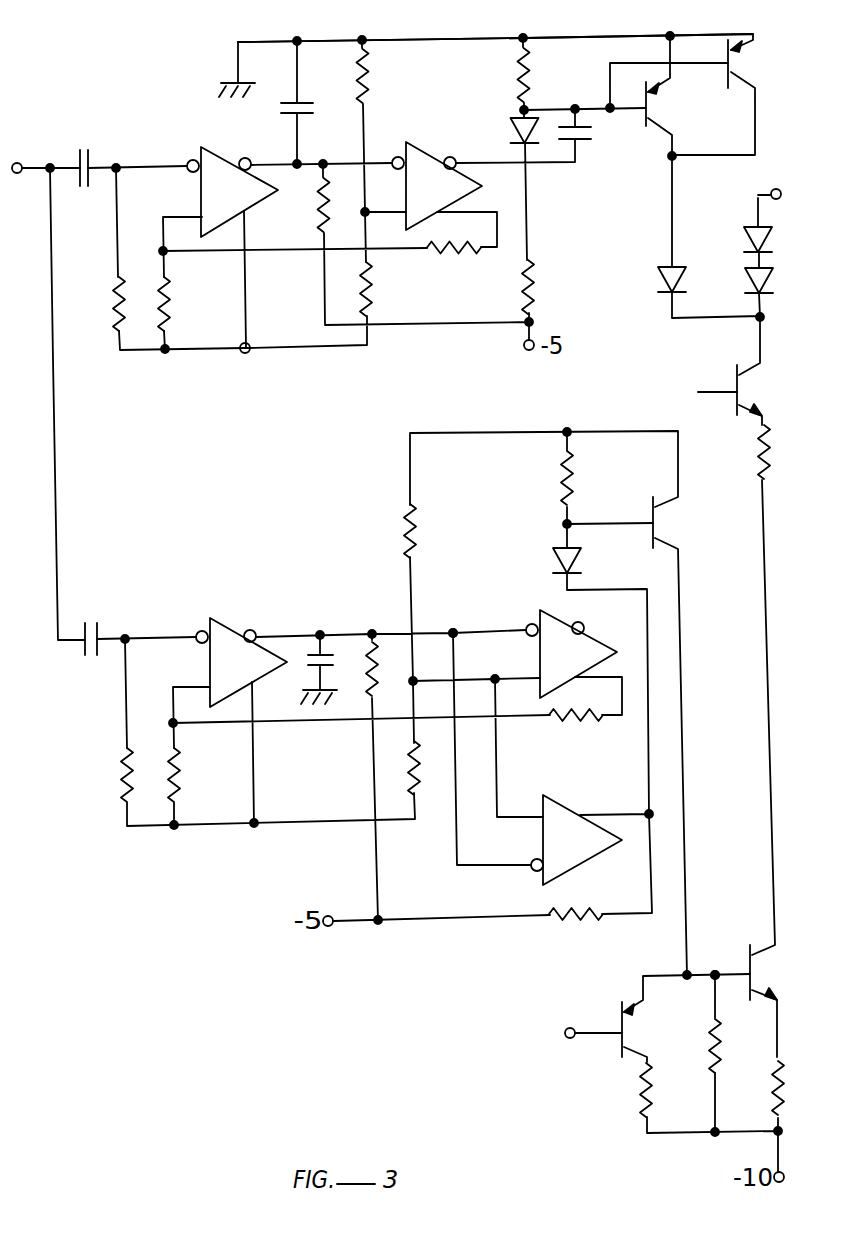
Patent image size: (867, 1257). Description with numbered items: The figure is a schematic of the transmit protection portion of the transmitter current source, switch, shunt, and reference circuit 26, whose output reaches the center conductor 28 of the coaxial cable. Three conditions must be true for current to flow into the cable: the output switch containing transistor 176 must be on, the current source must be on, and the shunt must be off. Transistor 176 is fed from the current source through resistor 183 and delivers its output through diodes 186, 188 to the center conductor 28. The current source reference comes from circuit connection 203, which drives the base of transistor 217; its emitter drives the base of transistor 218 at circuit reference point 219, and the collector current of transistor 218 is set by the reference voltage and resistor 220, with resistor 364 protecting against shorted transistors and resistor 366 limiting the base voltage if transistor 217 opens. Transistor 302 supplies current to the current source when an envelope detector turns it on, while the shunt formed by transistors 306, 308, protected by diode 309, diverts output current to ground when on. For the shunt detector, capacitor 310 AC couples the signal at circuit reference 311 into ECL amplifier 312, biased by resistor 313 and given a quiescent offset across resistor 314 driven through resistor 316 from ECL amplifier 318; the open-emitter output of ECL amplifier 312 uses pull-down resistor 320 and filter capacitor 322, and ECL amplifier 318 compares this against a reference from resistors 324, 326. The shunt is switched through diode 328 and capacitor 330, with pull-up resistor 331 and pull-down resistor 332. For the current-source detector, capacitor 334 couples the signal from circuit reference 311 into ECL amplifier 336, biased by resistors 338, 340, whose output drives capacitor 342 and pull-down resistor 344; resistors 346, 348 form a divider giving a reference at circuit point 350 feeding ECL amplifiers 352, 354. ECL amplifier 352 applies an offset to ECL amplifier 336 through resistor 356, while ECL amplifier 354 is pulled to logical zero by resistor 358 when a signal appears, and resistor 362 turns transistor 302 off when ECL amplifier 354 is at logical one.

The transmitter current source, switch, shunt, and reference circuit 26 is at (491, 30).
The center conductor 28 is at (762, 191).
The transistor 176 is at (736, 378).
The resistor 183 is at (758, 456).
The diode 186 is at (748, 280).
The diode 188 is at (748, 242).
The circuit connection 203 is at (546, 1022).
The transistor 217 is at (624, 1056).
The transistor 218 is at (758, 952).
The circuit reference point 219 is at (716, 972).
The resistor 220 is at (774, 1090).
The transistor 302 is at (670, 540).
The transistor 306 is at (647, 126).
The transistor 308 is at (728, 76).
The diode 309 is at (662, 286).
The capacitor 310 is at (91, 166).
The circuit reference 311 is at (22, 164).
The ECL amplifier 312 is at (202, 147).
The resistor 313 is at (118, 312).
The resistor 314 is at (166, 310).
The resistor 316 is at (480, 250).
The ECL amplifier 318 is at (412, 142).
The resistor 320 is at (320, 204).
The capacitor 322 is at (540, 292).
The resistor 324 is at (370, 86).
The resistor 326 is at (368, 284).
The diode 328 is at (512, 132).
The capacitor 330 is at (578, 140).
The resistor 331 is at (532, 84).
The resistor 332 is at (294, 116).
The capacitor 334 is at (100, 632).
The ECL amplifier 336 is at (226, 626).
The resistor 338 is at (122, 800).
The resistor 340 is at (178, 790).
The capacitor 342 is at (318, 652).
The resistor 344 is at (380, 642).
The resistor 346 is at (408, 530).
The resistor 348 is at (422, 808).
The circuit point 350 is at (450, 634).
The ECL amplifier 352 is at (538, 626).
The ECL amplifier 354 is at (576, 820).
The resistor 356 is at (584, 720).
The resistor 358 is at (590, 914).
The resistor 362 is at (562, 492).
The resistor 364 is at (644, 1098).
The resistor 366 is at (716, 1056).